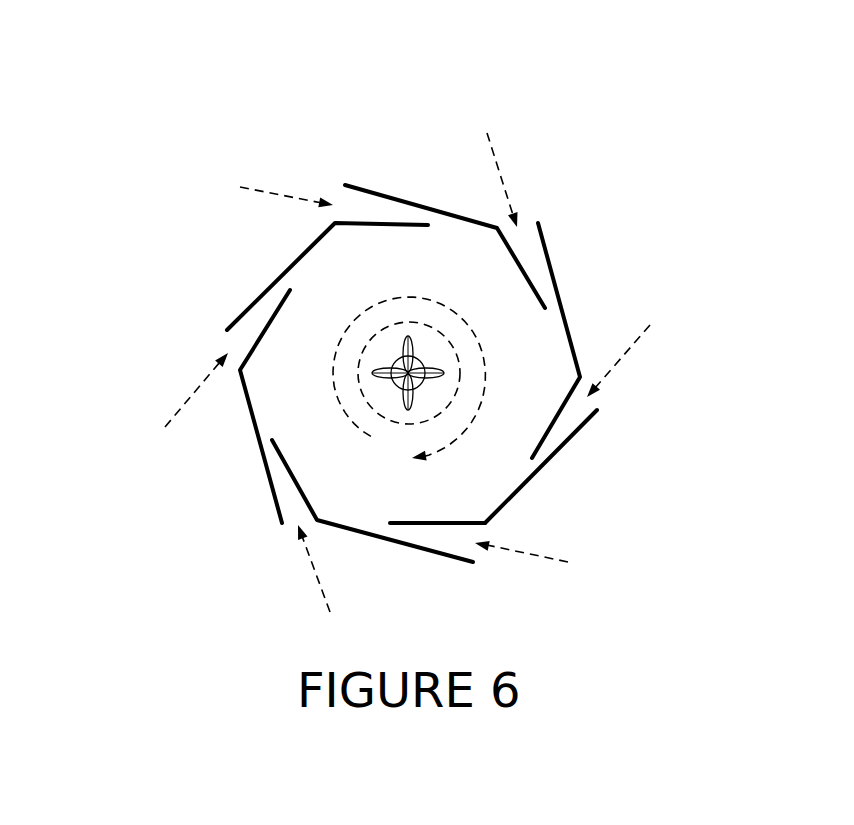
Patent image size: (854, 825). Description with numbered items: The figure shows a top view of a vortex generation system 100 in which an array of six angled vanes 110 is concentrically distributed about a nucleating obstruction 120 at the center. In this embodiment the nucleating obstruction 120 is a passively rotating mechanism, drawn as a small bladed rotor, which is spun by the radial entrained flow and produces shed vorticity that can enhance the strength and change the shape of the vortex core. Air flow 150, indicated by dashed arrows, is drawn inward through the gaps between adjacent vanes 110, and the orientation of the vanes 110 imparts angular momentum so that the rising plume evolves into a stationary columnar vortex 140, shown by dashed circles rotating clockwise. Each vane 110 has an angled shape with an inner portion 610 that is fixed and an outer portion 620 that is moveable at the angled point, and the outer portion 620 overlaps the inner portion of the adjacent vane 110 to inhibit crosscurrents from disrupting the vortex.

The vortex generation system 100 is at (253, 103).
The vanes 110 is at (417, 369).
The nucleating obstruction 120 is at (415, 393).
The stationary columnar vortex 140 is at (417, 269).
The air flow 150 is at (268, 193).
The inner portion 610 is at (457, 523).
The outer portion 620 is at (523, 483).